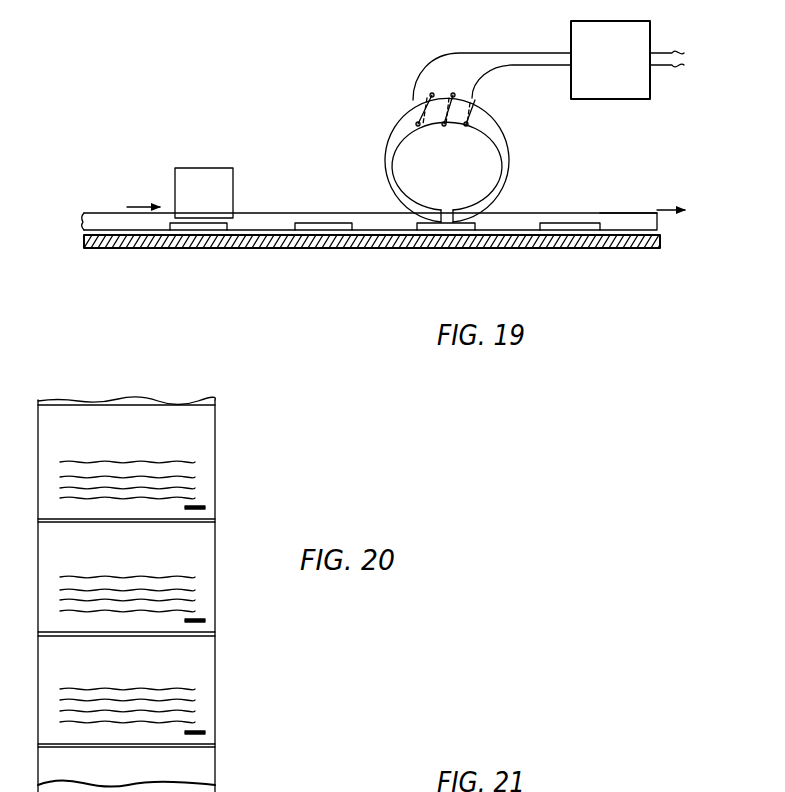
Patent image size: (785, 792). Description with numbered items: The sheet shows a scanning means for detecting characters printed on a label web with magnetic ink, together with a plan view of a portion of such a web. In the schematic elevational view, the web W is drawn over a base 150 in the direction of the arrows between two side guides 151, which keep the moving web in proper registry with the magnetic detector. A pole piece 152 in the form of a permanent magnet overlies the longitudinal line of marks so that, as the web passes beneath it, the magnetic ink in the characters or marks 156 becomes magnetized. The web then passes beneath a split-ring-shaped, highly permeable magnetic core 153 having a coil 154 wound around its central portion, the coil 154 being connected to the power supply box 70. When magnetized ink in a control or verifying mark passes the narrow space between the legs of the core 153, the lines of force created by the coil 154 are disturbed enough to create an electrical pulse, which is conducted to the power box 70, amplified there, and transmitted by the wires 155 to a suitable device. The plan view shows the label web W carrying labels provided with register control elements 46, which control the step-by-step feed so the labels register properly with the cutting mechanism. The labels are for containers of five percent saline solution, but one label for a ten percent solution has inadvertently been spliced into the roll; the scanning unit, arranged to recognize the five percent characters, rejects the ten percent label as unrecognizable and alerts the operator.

In FIG. 19, the power supply box 70 is at (610, 60).
In FIG. 19, the base 150 is at (304, 248).
In FIG. 19, the side guides 151 is at (622, 204).
In FIG. 19, the pole piece 152 is at (239, 159).
In FIG. 19, the magnetic core 153 is at (509, 160).
In FIG. 19, the coil 154 is at (444, 125).
In FIG. 19, the wires 155 is at (684, 60).
In FIG. 19, the characters or marks 156 is at (229, 222).
In FIG. 19, the web W is at (105, 228).
In FIG. 20, the web W is at (216, 445).
In FIG. 20, the register control elements 46 is at (205, 507).